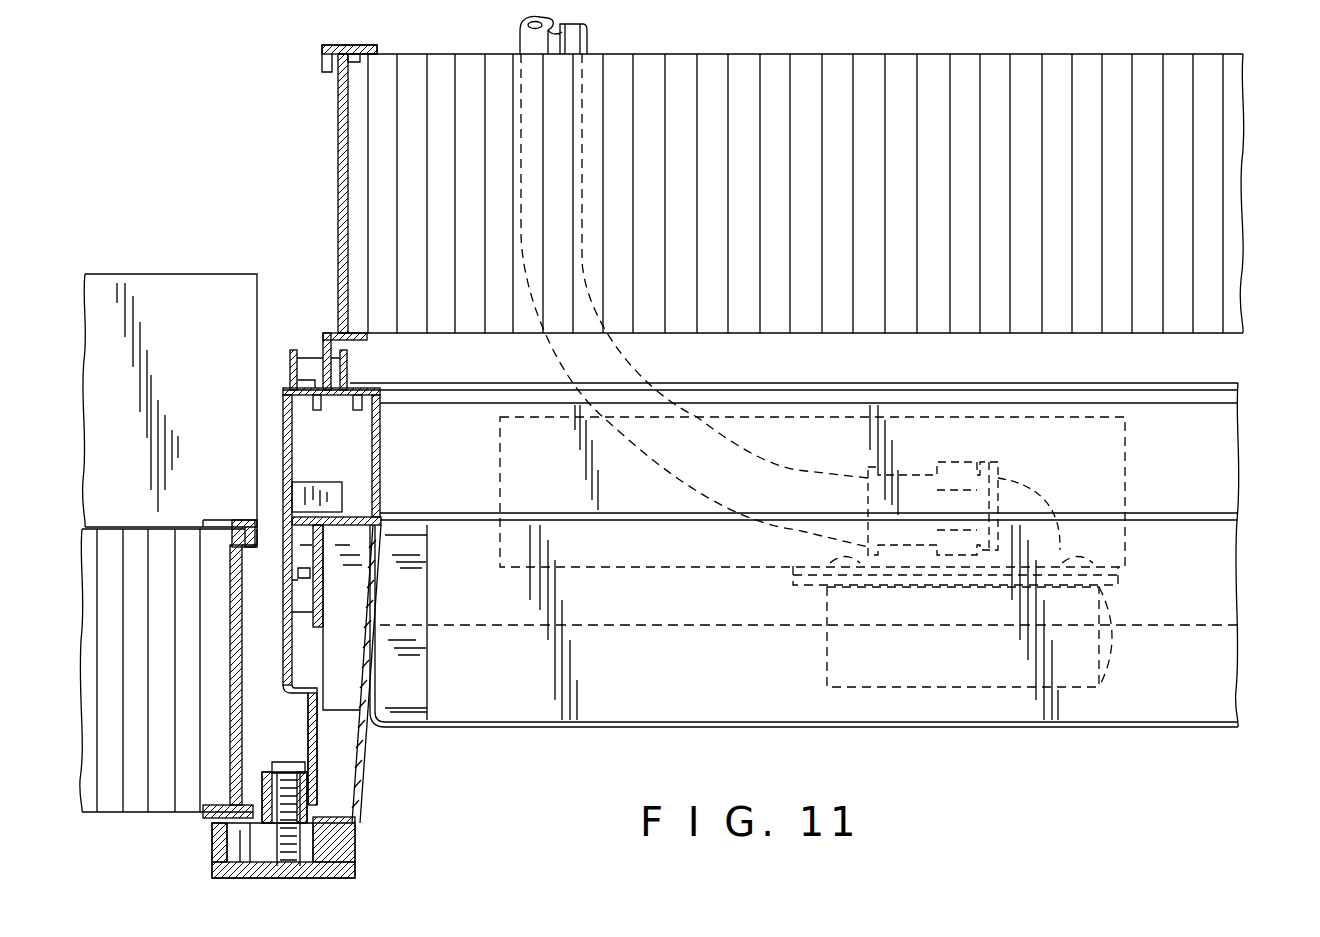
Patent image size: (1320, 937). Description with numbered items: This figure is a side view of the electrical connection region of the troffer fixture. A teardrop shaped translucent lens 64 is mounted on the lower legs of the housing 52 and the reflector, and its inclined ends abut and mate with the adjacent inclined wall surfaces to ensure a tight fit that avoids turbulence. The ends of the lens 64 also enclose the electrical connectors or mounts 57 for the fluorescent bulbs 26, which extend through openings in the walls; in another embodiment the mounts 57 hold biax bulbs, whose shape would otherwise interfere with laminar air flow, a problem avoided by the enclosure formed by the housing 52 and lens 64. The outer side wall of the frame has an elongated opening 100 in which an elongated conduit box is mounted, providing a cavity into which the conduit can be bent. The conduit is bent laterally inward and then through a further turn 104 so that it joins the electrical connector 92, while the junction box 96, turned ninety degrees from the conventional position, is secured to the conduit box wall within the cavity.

The housing 52 is at (1218, 456).
The teardrop shaped translucent lens 64 is at (870, 730).
The fluorescent bulb 26 is at (1240, 620).
The electrical connector or mount 57 is at (410, 658).
The elongated opening 100 is at (1128, 445).
The electrical connector 92 is at (990, 480).
The junction box 96 is at (845, 688).
The further turn 104 is at (672, 482).